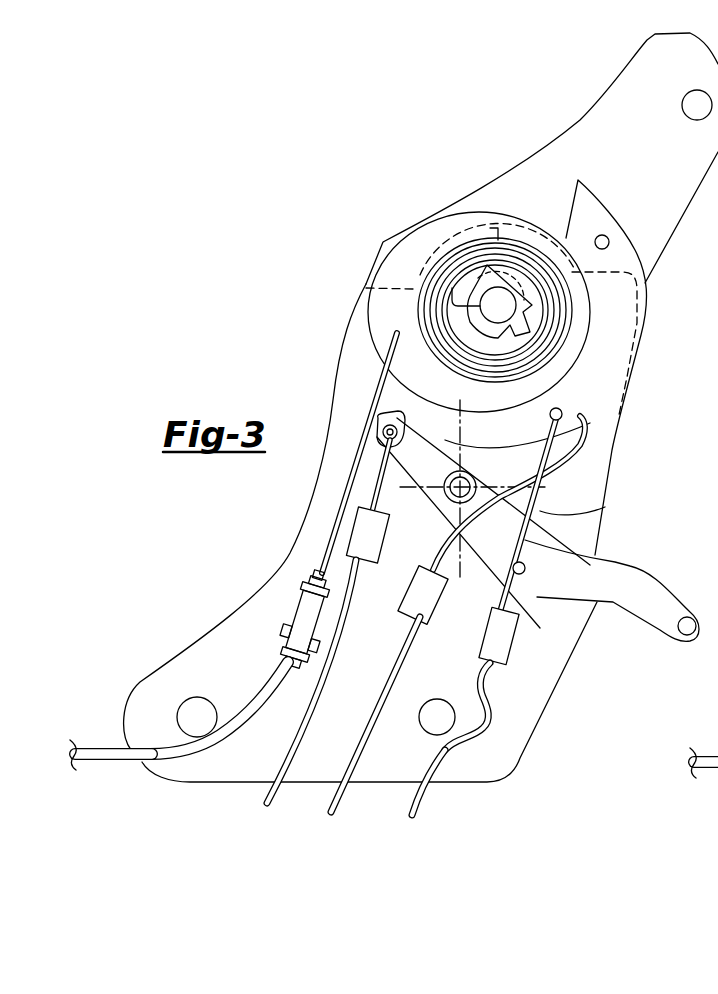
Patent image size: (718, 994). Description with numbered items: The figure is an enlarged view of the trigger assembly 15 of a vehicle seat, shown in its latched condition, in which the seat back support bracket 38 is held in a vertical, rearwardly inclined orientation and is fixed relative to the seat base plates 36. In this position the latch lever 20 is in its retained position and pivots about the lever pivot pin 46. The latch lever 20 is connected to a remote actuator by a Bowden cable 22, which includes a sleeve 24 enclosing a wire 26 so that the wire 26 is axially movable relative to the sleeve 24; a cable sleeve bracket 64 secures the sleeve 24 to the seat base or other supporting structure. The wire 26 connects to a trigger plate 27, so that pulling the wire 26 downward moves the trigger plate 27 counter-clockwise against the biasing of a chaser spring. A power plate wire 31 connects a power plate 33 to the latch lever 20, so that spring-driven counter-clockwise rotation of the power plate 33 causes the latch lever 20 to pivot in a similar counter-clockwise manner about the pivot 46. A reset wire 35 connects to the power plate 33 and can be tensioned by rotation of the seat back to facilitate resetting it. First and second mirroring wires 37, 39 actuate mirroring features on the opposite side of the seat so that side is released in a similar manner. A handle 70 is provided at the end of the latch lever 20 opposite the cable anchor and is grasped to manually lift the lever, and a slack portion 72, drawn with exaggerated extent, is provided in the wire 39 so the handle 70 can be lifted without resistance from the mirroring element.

The trigger assembly 15 is at (462, 198).
The latch lever 20 is at (552, 585).
The Bowden cable 22 is at (245, 700).
The sleeve 24 is at (107, 752).
The wire 26 is at (377, 390).
The trigger plate 27 is at (383, 320).
The power plate wire 31 is at (537, 510).
The power plate 33 is at (605, 330).
The reset wire 35 is at (392, 683).
The seat base plates 36 is at (297, 554).
The first mirroring wire 37 is at (262, 797).
The seat back support bracket 38 is at (612, 102).
The second mirroring wire 39 is at (435, 792).
The lever pivot pin 46 is at (470, 480).
The cable sleeve bracket 64 is at (283, 612).
The handle 70 is at (650, 588).
The slack portion 72 is at (495, 703).